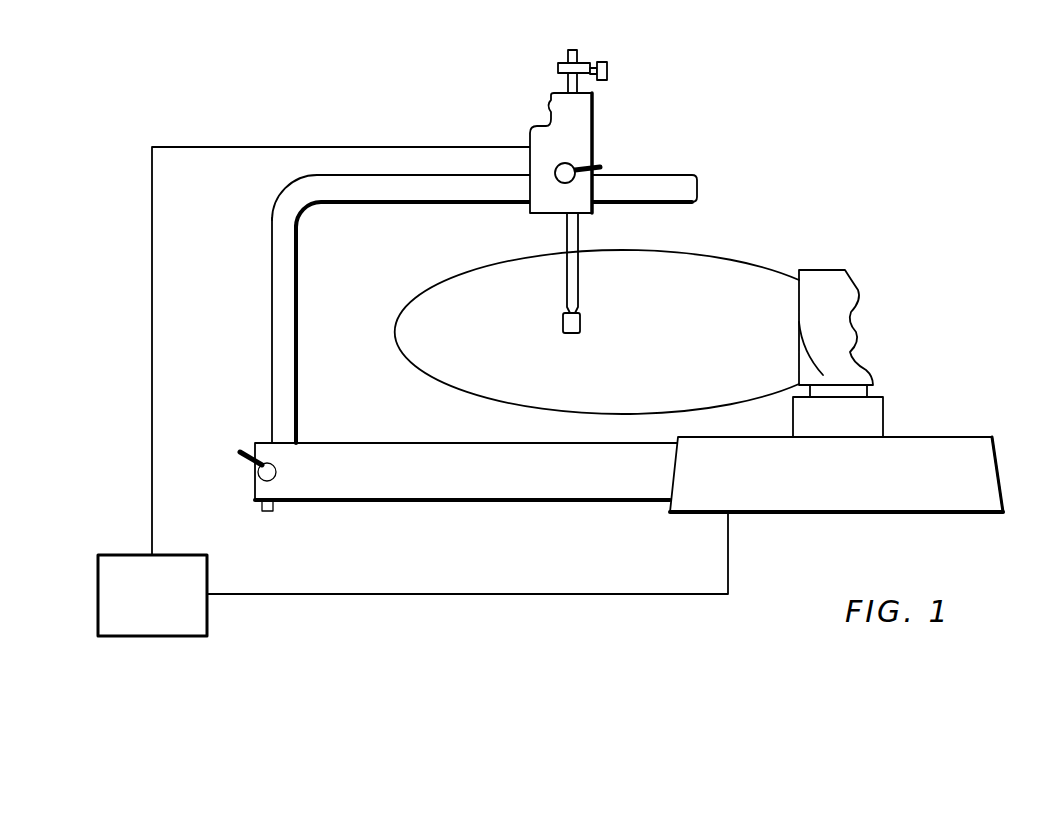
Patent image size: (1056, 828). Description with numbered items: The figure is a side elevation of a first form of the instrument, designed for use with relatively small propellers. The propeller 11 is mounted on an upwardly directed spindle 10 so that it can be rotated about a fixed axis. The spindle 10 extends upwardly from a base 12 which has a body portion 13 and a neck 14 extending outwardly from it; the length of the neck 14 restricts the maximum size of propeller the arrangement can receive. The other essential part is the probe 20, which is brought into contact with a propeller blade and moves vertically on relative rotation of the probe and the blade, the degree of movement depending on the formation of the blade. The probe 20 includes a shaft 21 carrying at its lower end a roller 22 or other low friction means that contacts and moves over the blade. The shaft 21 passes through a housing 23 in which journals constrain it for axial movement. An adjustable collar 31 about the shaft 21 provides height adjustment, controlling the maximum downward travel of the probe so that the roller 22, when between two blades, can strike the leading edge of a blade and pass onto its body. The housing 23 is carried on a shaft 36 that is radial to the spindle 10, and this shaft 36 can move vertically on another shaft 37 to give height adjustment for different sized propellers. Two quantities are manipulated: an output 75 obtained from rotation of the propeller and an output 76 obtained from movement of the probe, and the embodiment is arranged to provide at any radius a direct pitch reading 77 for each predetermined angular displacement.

The spindle 10 is at (855, 417).
The propeller 11 is at (423, 305).
The base 12 is at (924, 428).
The body portion 13 is at (975, 477).
The neck 14 is at (333, 467).
The probe 20 is at (509, 130).
The shaft 21 is at (572, 240).
The roller 22 is at (577, 325).
The housing 23 is at (577, 130).
The adjustable collar 31 is at (605, 60).
The shaft 36 is at (433, 192).
The shaft 37 is at (278, 278).
The output 75 is at (688, 596).
The output 76 is at (151, 410).
The direct pitch reading 77 is at (205, 603).